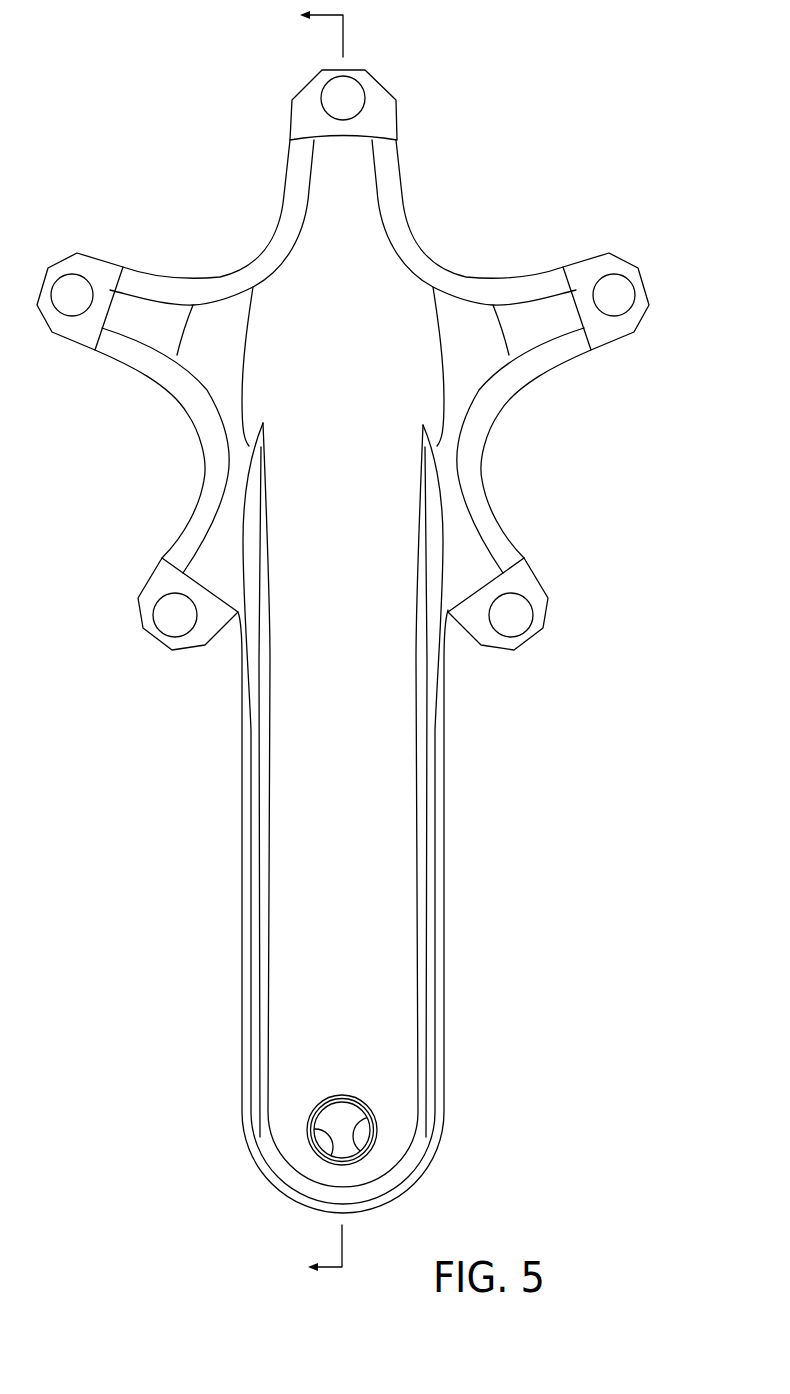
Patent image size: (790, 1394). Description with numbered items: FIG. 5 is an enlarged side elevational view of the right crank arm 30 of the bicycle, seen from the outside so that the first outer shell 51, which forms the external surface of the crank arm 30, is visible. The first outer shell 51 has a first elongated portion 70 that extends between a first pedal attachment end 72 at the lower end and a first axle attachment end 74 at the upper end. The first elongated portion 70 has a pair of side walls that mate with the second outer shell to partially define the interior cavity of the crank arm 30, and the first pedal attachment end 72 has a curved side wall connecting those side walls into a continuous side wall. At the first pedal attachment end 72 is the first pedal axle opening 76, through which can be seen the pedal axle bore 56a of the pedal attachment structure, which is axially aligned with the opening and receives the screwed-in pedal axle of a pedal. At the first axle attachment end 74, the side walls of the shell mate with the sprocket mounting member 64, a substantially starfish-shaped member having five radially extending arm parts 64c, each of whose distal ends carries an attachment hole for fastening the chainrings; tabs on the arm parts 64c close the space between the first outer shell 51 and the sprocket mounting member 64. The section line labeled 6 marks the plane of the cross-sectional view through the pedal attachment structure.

The right crank arm 30 is at (145, 127).
The sprocket mounting member 64 is at (545, 572).
The arm parts 64c is at (398, 118).
The first axle attachment end 74 is at (360, 382).
The first elongated portion 70 is at (367, 918).
The first outer shell 51 is at (426, 793).
The first pedal attachment end 72 is at (392, 1110).
The first pedal axle opening 76 is at (362, 1160).
The pedal axle bore 56a is at (332, 1161).
The section line 6- 6 is at (313, 642).